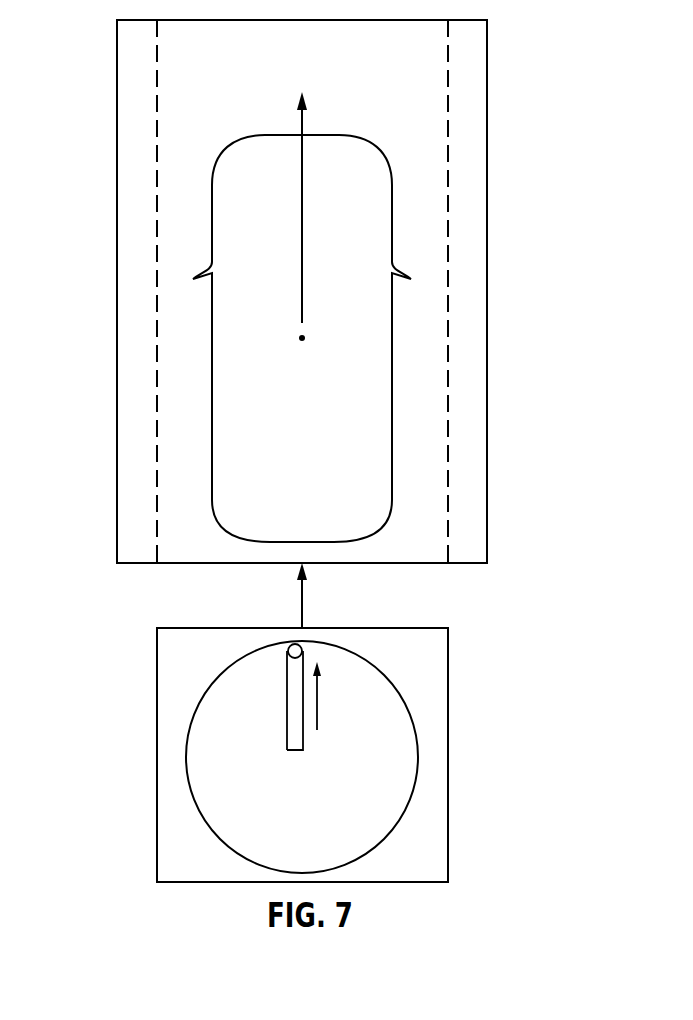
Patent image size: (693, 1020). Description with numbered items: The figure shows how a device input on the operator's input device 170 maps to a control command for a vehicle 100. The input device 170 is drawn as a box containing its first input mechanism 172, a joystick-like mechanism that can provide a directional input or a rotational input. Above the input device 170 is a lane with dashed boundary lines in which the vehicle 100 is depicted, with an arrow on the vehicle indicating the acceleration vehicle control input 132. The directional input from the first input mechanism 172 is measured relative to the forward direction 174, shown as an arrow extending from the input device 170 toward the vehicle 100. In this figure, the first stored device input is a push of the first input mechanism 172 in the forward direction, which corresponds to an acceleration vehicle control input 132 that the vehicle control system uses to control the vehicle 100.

The vehicle 100 is at (277, 418).
The vehicle control input 132 is at (304, 117).
The input device 170 is at (488, 799).
The first input mechanism 172 is at (398, 745).
The forward direction 174 is at (303, 611).